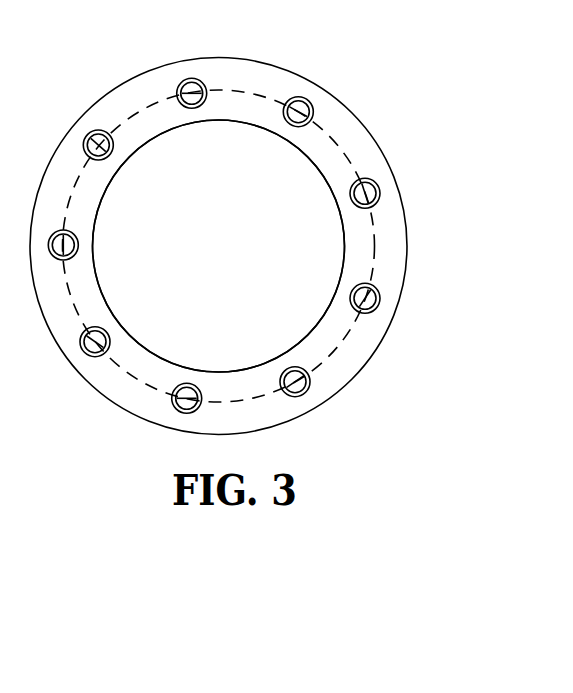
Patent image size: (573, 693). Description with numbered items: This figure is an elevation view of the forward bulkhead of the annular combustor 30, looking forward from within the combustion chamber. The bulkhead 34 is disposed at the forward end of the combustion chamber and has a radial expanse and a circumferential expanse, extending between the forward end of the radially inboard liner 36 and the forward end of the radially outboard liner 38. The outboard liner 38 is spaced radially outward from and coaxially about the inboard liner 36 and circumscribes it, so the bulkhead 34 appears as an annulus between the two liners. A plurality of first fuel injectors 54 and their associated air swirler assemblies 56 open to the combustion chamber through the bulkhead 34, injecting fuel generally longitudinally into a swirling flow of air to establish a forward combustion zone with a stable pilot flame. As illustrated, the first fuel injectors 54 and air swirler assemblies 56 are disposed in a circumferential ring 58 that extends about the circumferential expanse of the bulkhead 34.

The annular combustor 30 is at (248, 234).
The bulkhead 34 is at (318, 138).
The radially inboard liner 36 is at (337, 210).
The radially outboard liner 38 is at (409, 243).
The first fuel injectors 54 is at (195, 107).
The air swirler assemblies 56 is at (203, 83).
The circumferential ring 58 is at (375, 218).